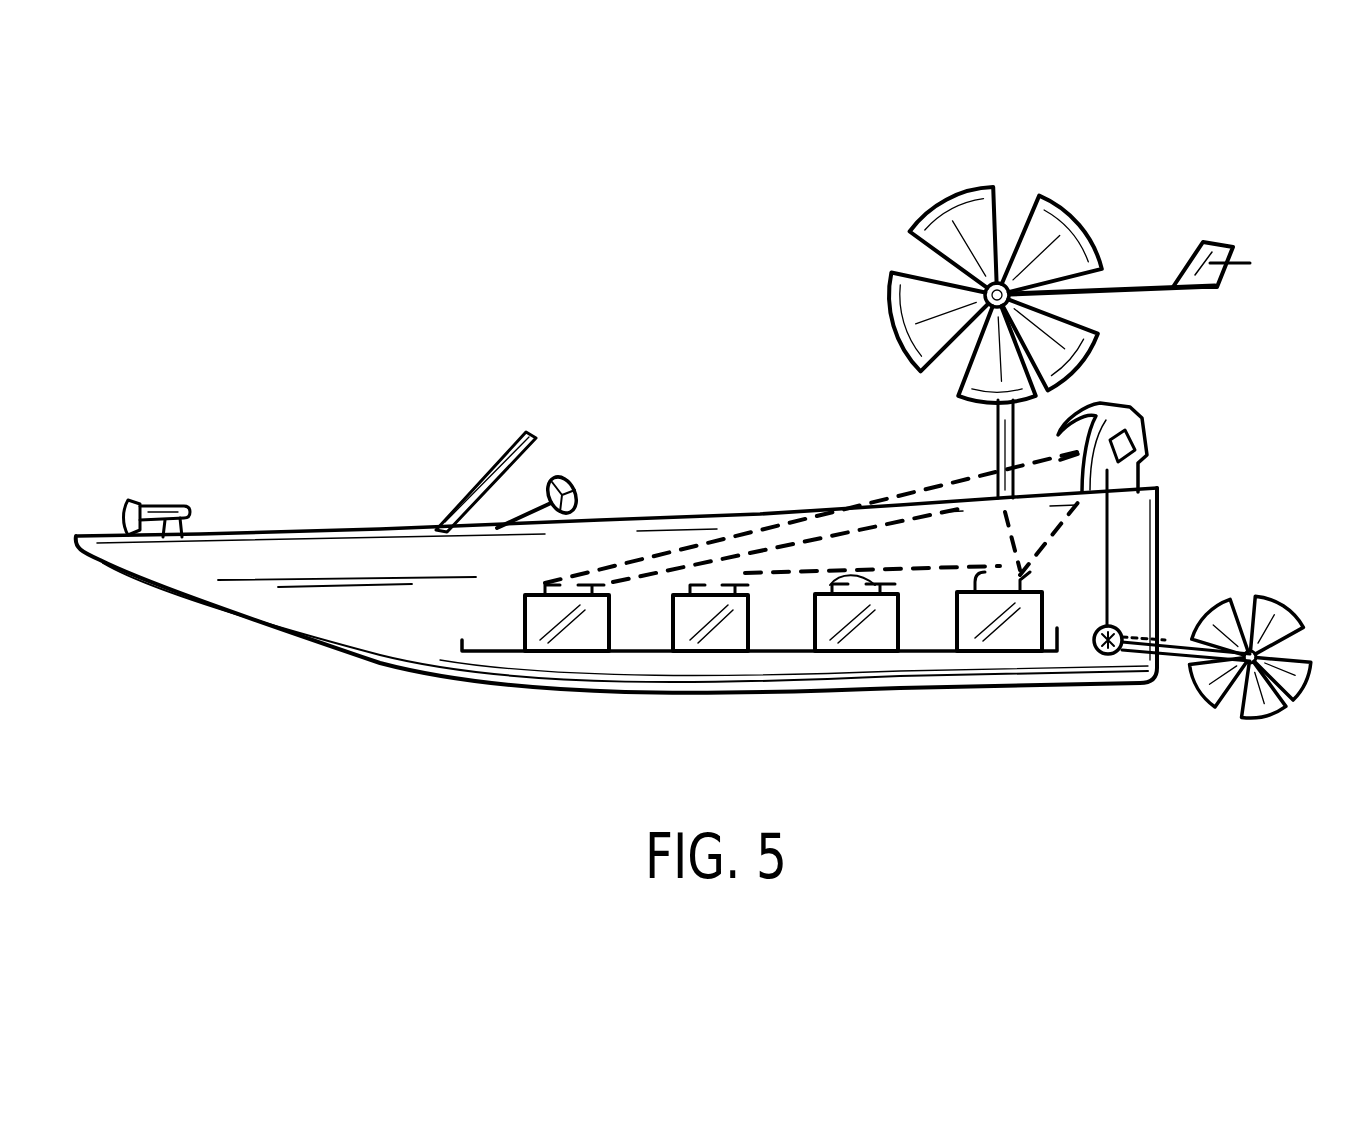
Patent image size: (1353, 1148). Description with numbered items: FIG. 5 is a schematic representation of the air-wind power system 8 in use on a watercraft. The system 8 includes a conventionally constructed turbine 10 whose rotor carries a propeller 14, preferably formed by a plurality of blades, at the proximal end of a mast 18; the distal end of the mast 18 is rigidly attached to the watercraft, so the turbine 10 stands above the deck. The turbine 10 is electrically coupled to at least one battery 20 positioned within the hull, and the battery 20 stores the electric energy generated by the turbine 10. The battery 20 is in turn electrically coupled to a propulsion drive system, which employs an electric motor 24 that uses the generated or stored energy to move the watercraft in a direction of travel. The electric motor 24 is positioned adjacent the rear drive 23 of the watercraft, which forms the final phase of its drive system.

The air-wind power system 8 is at (338, 333).
The turbine 10 is at (1187, 173).
The propeller 14 is at (1063, 203).
The mast 18 is at (997, 448).
The battery 20 is at (987, 618).
The rear drive 23 is at (1112, 626).
The electric motor 24 is at (1140, 417).